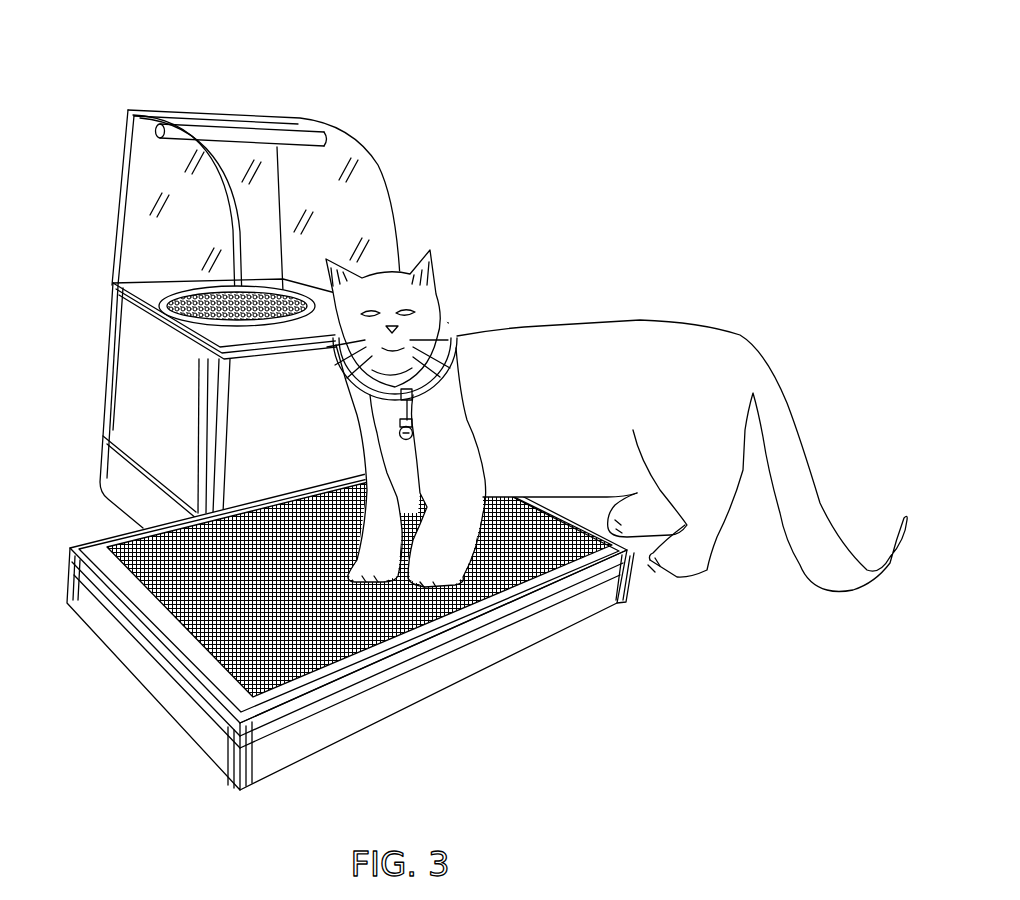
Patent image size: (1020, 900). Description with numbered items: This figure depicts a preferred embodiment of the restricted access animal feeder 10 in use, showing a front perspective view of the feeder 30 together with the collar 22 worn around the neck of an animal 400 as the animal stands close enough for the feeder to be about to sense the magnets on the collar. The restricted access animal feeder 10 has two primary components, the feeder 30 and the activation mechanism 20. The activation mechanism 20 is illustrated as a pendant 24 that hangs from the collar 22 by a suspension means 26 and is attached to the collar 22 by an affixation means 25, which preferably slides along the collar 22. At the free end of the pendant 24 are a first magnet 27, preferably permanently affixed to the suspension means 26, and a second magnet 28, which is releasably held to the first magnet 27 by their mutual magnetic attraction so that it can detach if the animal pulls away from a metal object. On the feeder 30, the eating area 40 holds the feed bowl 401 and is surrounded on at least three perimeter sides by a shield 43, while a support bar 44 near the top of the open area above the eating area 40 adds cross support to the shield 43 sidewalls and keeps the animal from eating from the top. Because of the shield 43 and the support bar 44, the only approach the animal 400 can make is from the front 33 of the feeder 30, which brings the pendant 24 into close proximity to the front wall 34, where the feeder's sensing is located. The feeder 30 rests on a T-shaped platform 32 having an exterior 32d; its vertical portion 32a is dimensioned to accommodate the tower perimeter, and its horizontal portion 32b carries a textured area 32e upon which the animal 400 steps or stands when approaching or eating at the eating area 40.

The restricted access animal feeder 10 is at (178, 74).
The feeder 30 is at (89, 176).
The shield 43 is at (128, 127).
The support bar 44 is at (262, 135).
The eating area 40 is at (258, 267).
The feed bowl 401 is at (283, 297).
The front 33 is at (249, 376).
The front wall 34 is at (237, 408).
The vertical portion 32a is at (113, 460).
The platform 32 is at (350, 622).
The horizontal portion 32b is at (493, 653).
The exterior 32d is at (183, 725).
The textured area 32e is at (303, 660).
The animal 400 is at (594, 421).
The collar 22 is at (450, 330).
The activation mechanism 20 is at (407, 434).
The pendant 24 is at (407, 434).
The affixation means 25 is at (400, 393).
The suspension means 26 is at (403, 415).
The first magnet 27 is at (403, 428).
The second magnet 28 is at (411, 440).